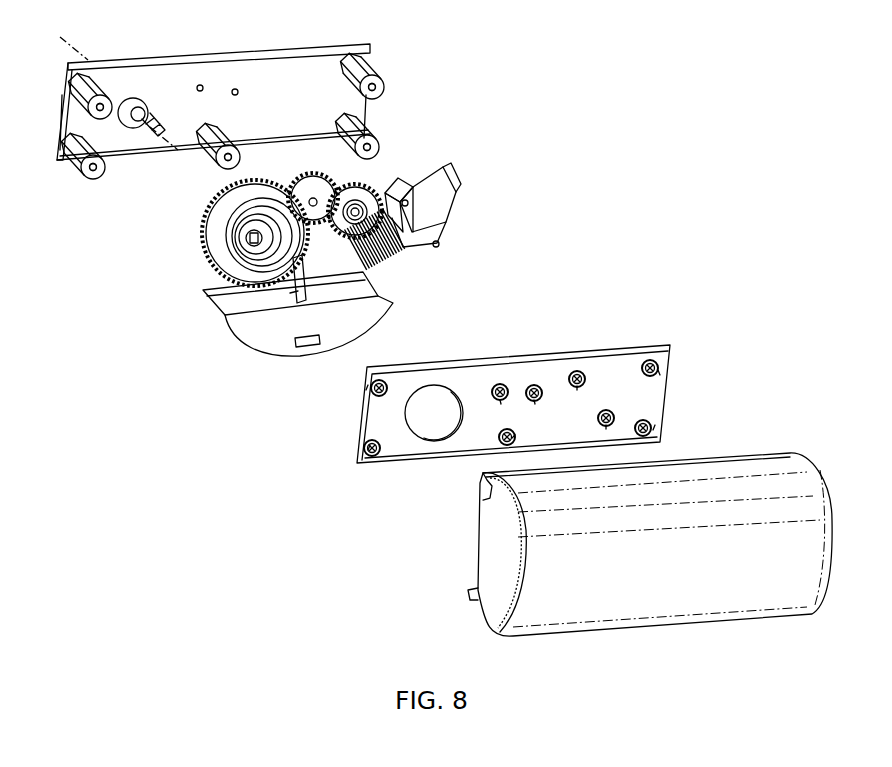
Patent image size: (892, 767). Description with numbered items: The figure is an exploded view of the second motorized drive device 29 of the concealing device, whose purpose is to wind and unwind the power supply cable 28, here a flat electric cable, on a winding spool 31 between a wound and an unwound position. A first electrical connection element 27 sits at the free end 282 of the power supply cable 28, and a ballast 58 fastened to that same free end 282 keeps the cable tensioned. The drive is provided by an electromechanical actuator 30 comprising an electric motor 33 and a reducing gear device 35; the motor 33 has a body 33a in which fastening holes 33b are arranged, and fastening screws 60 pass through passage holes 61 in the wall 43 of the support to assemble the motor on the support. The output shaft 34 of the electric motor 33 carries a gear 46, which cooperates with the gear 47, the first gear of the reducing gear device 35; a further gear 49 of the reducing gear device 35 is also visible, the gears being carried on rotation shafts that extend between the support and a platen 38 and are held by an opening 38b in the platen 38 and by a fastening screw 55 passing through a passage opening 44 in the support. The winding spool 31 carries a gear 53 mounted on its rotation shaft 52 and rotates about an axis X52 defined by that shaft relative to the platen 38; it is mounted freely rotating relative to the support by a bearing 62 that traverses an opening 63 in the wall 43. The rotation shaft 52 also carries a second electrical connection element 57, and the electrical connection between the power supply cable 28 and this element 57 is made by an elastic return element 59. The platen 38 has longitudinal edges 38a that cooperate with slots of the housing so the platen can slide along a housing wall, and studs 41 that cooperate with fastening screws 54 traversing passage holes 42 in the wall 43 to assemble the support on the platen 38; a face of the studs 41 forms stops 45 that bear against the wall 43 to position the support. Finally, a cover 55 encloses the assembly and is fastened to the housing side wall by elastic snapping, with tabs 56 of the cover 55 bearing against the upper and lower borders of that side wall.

The first electrical connection element 27 is at (313, 346).
The power supply cable 28 is at (306, 281).
The second motorized drive device 29 is at (677, 128).
The electromechanical actuator 30 is at (452, 179).
The winding spool 31 is at (223, 237).
The electric motor 33 is at (440, 203).
The body 33a is at (417, 215).
The fastening holes 33b is at (406, 206).
The output shaft 34 is at (355, 253).
The reducing gear device 35 is at (327, 160).
The platen 38 is at (256, 68).
The edges of the platen 38a is at (150, 63).
The opening 38b is at (234, 89).
The studs 41 is at (80, 96).
The passage holes 42 is at (357, 378).
The wall 43 is at (402, 448).
The passage opening 44 is at (536, 400).
The stops 45 is at (102, 113).
The gear 46 is at (398, 250).
The gear 47 is at (362, 190).
The gear 49 is at (300, 187).
The rotation shaft 52 is at (153, 109).
The gear 53 is at (210, 200).
The fastening screws 54 is at (388, 383).
The cover 55 is at (534, 385).
The tabs 56 is at (485, 489).
The second electrical connection element 57 is at (156, 140).
The ballast 58 is at (257, 338).
The elastic return element 59 is at (252, 244).
The fastening screws 60 is at (599, 416).
The passage holes 61 is at (586, 380).
The bearing 62 is at (243, 228).
The opening 63 is at (440, 405).
The free end 282 is at (296, 292).
The axis X52 is at (86, 62).